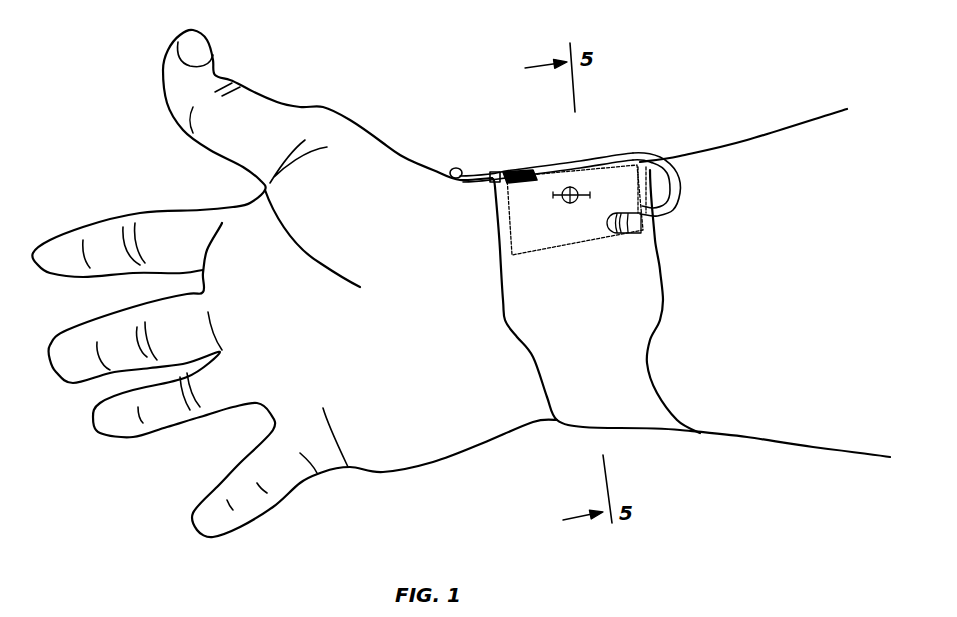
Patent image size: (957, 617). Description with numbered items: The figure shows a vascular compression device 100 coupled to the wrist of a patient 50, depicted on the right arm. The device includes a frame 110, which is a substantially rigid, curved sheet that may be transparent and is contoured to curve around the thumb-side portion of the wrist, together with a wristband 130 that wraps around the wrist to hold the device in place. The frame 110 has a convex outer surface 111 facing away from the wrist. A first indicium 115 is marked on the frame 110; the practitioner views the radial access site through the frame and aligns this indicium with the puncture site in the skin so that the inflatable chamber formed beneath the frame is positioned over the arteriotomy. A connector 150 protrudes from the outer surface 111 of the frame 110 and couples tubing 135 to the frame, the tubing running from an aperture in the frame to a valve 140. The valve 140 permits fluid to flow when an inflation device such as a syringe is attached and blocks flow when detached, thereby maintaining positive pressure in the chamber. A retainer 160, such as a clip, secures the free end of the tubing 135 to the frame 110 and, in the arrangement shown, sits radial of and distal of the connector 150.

The patient 50 is at (822, 294).
The vascular compression device 100 is at (576, 178).
The frame 110 is at (538, 228).
The outer surface 111 is at (620, 183).
The first indicium 115 is at (565, 188).
The wristband 130 is at (637, 425).
The tubing 135 is at (681, 194).
The valve 140 is at (451, 168).
The connector 150 is at (634, 233).
The retainer 160 is at (512, 180).